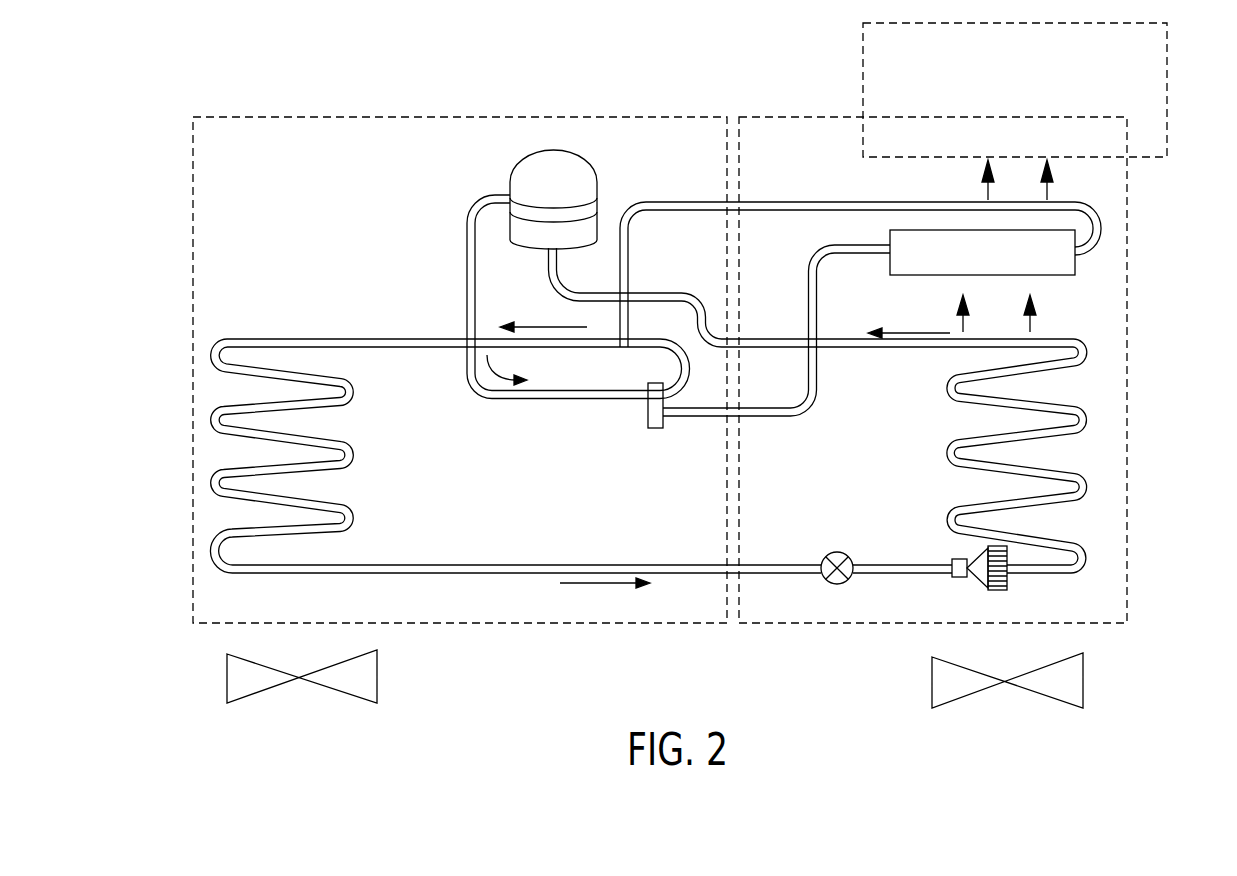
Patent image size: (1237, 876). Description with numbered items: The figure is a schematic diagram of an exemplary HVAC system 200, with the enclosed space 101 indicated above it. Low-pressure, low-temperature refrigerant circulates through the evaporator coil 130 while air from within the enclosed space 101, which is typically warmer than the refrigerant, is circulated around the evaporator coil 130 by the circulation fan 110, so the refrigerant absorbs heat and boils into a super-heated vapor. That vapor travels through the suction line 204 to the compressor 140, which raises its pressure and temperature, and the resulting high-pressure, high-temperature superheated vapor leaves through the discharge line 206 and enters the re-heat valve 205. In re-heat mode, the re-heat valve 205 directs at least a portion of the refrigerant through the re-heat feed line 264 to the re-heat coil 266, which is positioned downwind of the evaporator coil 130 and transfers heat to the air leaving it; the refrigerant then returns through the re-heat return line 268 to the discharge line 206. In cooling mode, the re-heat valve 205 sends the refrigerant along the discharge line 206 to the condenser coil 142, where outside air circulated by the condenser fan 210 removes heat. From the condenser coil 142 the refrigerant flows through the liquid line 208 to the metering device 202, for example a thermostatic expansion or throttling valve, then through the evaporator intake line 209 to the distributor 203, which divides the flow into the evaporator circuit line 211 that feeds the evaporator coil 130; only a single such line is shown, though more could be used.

The enclosed space 101 is at (1167, 95).
The HVAC system 200 is at (779, 98).
The compressor 140 is at (510, 184).
The discharge line 206 is at (405, 338).
The condenser coil 142 is at (354, 390).
The liquid line 208 is at (480, 563).
The metering device 202 is at (840, 553).
The evaporator intake line 209 is at (897, 575).
The distributor 203 is at (978, 585).
The evaporator circuit line 211 is at (1045, 573).
The evaporator coil 130 is at (947, 383).
The suction line 204 is at (848, 337).
The re-heat valve 205 is at (653, 430).
The re-heat feed line 264 is at (806, 400).
The re-heat coil 266 is at (1063, 263).
The re-heat return line 268 is at (782, 200).
The condenser fan 210 is at (377, 680).
The circulation fan 110 is at (1083, 683).